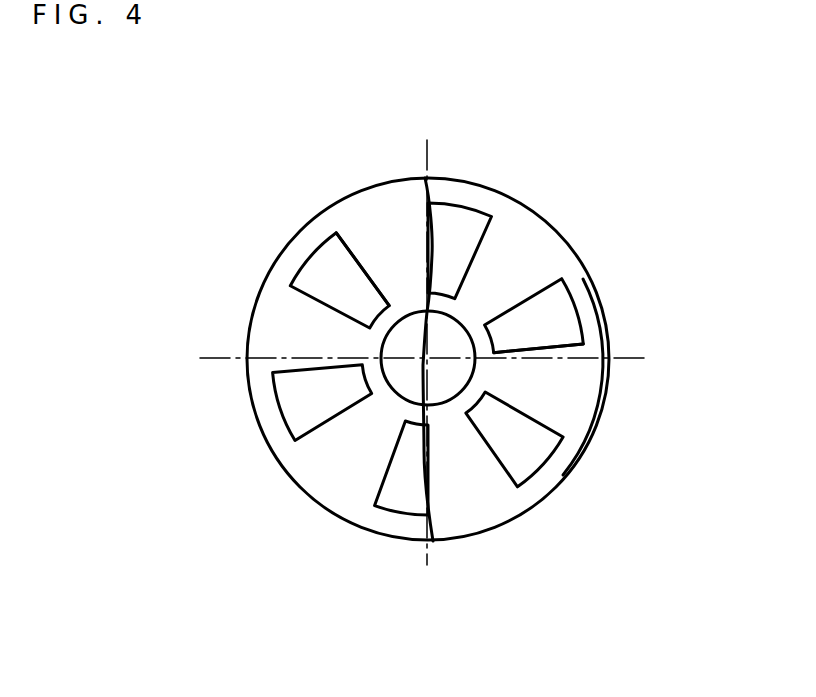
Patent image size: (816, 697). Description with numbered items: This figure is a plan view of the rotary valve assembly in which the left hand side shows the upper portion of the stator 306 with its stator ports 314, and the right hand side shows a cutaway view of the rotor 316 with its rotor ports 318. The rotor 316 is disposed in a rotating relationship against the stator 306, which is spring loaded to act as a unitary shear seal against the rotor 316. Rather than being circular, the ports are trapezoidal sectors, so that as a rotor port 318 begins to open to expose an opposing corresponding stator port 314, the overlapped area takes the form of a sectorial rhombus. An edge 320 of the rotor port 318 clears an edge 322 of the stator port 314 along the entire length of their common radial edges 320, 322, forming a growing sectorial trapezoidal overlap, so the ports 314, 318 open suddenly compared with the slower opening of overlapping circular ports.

The stator 306 is at (383, 193).
The stator port 314 is at (320, 266).
The rotor 316 is at (580, 410).
The rotor port 318 is at (556, 336).
The edge of rotor port 320 is at (528, 300).
The edge of stator port 322 is at (347, 247).